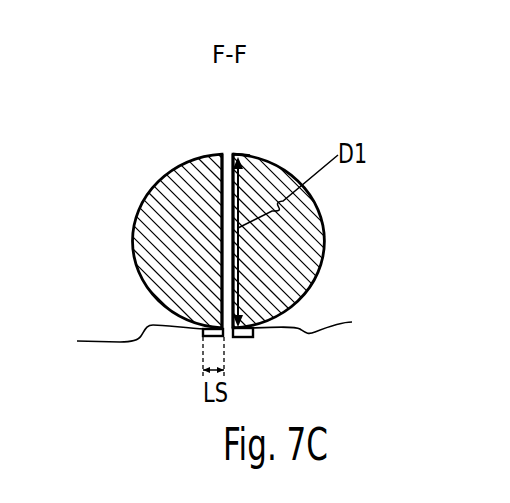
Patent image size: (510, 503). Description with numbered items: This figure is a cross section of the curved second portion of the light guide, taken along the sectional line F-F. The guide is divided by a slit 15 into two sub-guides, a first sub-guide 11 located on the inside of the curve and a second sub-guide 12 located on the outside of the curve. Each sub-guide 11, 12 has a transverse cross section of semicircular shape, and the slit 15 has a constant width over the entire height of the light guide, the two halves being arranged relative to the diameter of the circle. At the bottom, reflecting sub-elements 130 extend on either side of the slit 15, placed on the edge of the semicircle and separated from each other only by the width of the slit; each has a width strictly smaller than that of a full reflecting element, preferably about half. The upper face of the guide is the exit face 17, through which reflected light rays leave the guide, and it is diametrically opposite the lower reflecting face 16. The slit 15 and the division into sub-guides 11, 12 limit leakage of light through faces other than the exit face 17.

The first sub-guide 11 is at (300, 240).
The second sub-guide 12 is at (148, 225).
The slit 15 is at (228, 141).
The reflecting face 16 is at (213, 338).
The exit face 17 is at (247, 157).
The reflecting sub-elements 130 is at (213, 330).